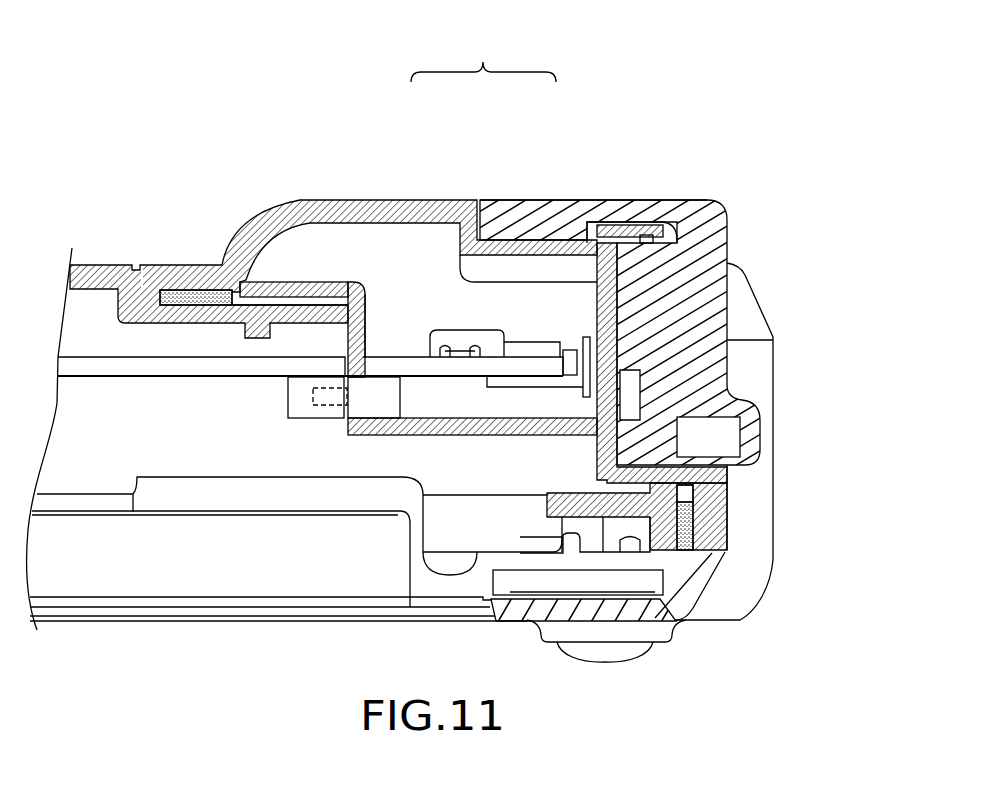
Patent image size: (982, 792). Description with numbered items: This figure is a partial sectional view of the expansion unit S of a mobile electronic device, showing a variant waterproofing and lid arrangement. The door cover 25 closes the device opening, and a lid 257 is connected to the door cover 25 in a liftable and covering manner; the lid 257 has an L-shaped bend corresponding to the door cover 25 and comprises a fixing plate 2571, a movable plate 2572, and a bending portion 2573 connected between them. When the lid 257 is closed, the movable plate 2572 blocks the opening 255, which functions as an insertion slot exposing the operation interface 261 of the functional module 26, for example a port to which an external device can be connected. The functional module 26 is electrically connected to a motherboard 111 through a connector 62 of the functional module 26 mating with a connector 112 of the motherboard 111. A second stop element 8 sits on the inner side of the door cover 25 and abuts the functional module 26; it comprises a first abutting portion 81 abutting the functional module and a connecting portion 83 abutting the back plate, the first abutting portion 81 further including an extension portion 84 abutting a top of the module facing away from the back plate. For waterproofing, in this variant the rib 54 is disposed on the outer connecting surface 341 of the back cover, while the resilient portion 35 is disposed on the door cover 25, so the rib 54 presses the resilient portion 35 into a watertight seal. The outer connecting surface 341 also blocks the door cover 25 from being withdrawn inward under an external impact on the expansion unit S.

The door cover 25 is at (422, 188).
The lid 257 is at (540, 192).
The fixing plate 2571 is at (578, 194).
The movable plate 2572 is at (727, 353).
The bending portion 2573 is at (607, 202).
The rib 54 is at (647, 240).
The resilient portion 35 is at (203, 290).
The motherboard 111 is at (295, 367).
The connecting portion 83 is at (307, 390).
The connector 112 is at (330, 392).
The connector 62 is at (334, 385).
The first abutting portion 81 is at (366, 328).
The operation interface 261 is at (599, 357).
The opening 255 is at (609, 357).
The second stop element 8 is at (578, 450).
The outer connecting surface 341 is at (240, 306).
The functional module 26 is at (557, 451).
The extension portion 84 is at (397, 436).
The expansion unit S is at (483, 57).